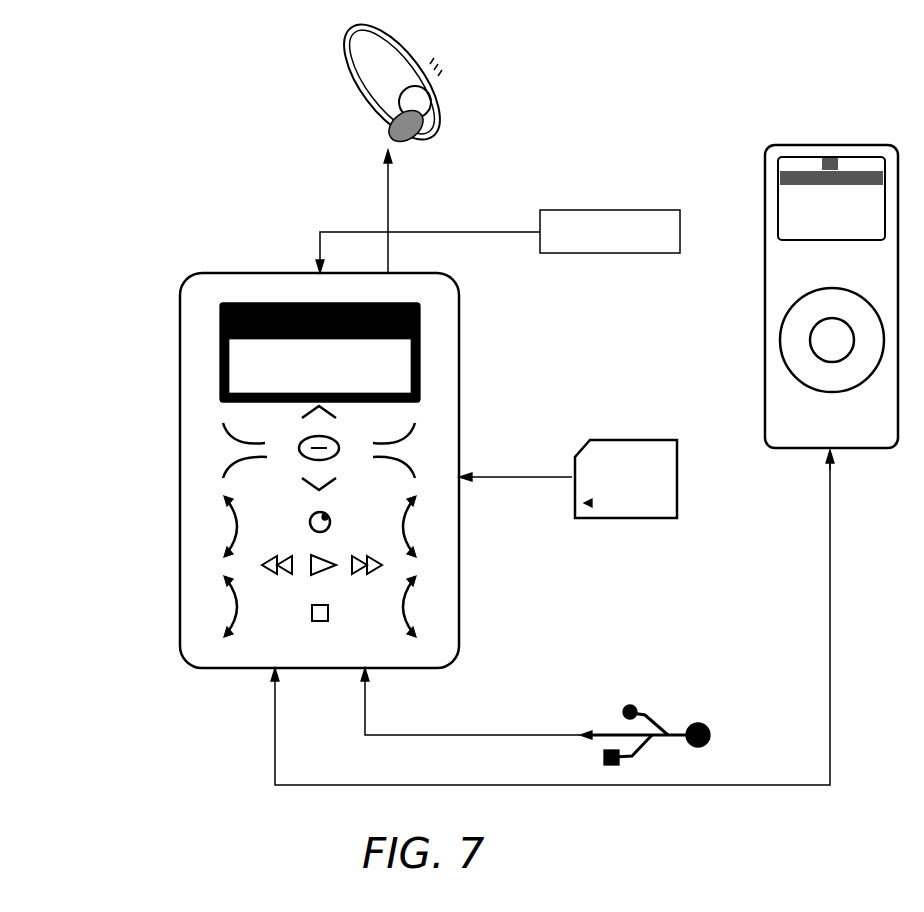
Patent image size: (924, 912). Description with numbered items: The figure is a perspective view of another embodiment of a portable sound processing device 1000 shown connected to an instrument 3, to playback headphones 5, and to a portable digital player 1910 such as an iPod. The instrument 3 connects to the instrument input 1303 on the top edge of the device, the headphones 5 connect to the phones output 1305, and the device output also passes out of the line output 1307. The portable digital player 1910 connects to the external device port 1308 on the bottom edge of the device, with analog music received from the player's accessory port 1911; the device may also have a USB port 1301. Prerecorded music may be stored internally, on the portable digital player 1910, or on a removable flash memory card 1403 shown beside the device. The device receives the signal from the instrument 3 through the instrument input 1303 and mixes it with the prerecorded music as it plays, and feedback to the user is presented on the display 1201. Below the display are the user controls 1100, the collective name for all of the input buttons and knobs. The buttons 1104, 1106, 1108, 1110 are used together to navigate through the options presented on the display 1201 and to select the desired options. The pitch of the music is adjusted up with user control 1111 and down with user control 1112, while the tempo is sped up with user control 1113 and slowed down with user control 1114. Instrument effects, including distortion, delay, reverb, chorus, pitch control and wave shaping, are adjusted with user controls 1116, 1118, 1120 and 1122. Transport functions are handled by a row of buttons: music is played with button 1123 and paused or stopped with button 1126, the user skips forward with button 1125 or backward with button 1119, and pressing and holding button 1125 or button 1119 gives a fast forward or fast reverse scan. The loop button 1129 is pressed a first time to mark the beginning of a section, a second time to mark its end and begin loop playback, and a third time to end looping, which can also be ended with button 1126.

The portable sound processing device 1000 is at (145, 302).
The playback headphones 5 is at (448, 62).
The instrument 3 is at (681, 223).
The line output 1307 is at (243, 273).
The instrument input 1303 is at (310, 273).
The phones output 1305 is at (378, 273).
The display 1201 is at (420, 345).
The user controls 1100 is at (440, 420).
The navigation button 1106 is at (303, 413).
The navigation button 1104 is at (222, 423).
The navigation button 1108 is at (298, 451).
The navigation button 1110 is at (305, 483).
The pitch up user control 1111 is at (225, 501).
The pitch down user control 1112 is at (225, 553).
The tempo up user control 1113 is at (225, 581).
The tempo down user control 1114 is at (225, 633).
The instrument effects user control 1116 is at (418, 507).
The instrument effects user control 1118 is at (418, 555).
The instrument effects user control 1120 is at (418, 580).
The instrument effects user control 1122 is at (418, 632).
The loop button 1129 is at (314, 530).
The skip backward button 1119 is at (277, 580).
The play button 1123 is at (327, 572).
The skip forward button 1125 is at (366, 578).
The stop button 1126 is at (328, 620).
The external device port 1308 is at (270, 672).
The USB port 1301 is at (535, 716).
The removable flash memory card 1403 is at (622, 437).
The portable digital player 1910 is at (833, 143).
The accessory port 1911 is at (838, 452).